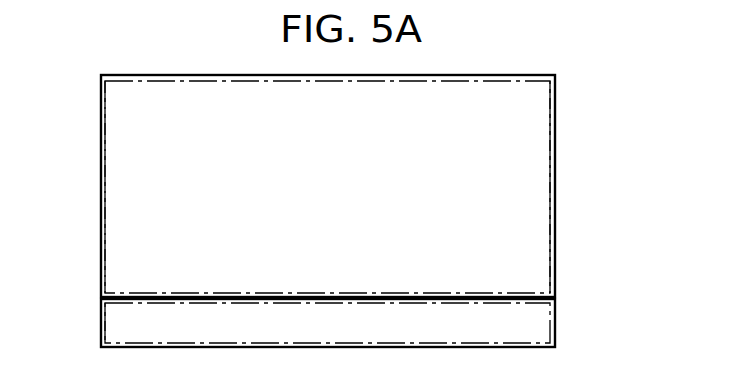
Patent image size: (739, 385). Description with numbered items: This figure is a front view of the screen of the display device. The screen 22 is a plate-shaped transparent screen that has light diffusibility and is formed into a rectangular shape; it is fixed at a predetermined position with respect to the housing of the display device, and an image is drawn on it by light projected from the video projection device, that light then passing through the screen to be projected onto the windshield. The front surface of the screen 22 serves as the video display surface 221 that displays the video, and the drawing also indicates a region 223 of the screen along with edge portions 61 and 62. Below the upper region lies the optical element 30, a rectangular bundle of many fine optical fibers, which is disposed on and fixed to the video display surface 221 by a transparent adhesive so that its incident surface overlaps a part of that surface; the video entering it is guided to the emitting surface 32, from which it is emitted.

The screen 22 is at (560, 103).
The video display surface 221 is at (518, 171).
The panel edge region 223 is at (552, 232).
The optical element 30 is at (561, 334).
The emitting surface 32 is at (538, 313).
The first side portion 61 is at (105, 190).
The second side portion 62 is at (108, 322).